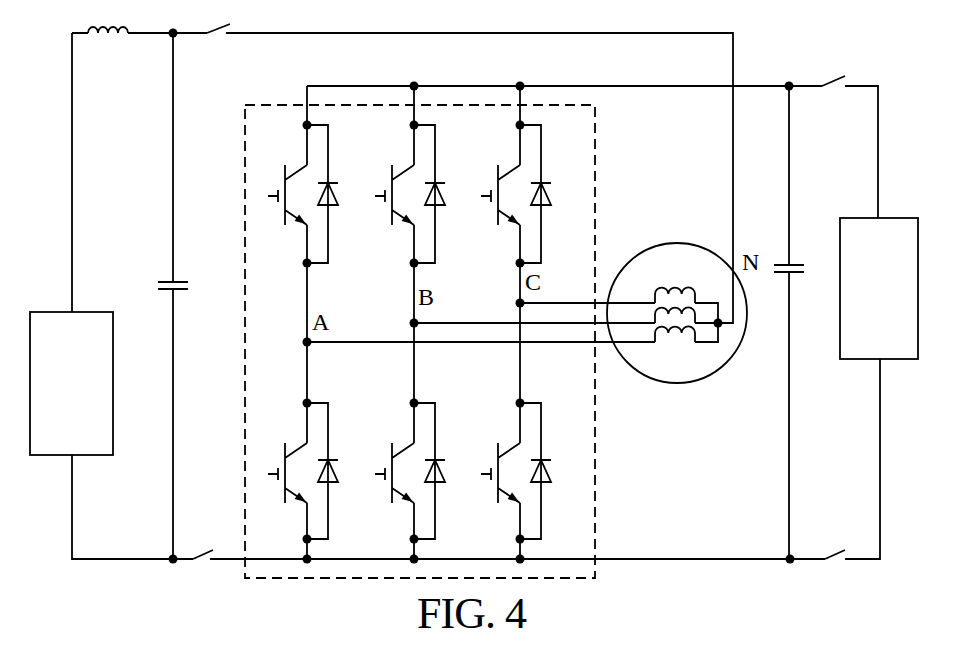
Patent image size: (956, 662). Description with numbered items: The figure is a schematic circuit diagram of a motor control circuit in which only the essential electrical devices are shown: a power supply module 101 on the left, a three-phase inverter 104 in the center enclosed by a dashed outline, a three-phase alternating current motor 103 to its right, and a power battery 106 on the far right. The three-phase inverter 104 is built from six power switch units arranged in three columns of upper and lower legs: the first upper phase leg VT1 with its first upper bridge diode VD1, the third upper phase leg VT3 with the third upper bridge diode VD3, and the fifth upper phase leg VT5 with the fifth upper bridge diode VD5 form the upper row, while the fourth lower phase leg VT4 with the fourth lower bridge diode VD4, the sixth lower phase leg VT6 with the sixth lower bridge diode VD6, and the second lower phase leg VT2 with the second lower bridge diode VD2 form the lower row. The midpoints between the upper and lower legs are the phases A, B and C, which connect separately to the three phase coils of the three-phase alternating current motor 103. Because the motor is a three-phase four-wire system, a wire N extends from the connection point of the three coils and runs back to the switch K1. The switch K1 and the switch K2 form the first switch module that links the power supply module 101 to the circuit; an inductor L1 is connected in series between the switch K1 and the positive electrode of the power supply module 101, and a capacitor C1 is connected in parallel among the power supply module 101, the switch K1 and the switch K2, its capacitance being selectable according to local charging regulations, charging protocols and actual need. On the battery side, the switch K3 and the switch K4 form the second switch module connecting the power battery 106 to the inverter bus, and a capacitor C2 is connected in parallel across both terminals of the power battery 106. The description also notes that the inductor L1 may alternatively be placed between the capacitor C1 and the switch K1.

The power supply module 101 is at (80, 312).
The three-phase alternating current motor 103 is at (676, 244).
The three-phase inverter 104 is at (596, 180).
The power battery 106 is at (864, 218).
The inductor L1 is at (108, 17).
The switch K1 is at (218, 18).
The switch K2 is at (204, 543).
The switch K3 is at (837, 70).
The switch K4 is at (837, 543).
The capacitor C1 is at (160, 273).
The capacitor C2 is at (800, 282).
The first upper phase leg VT1 is at (278, 181).
The second lower phase leg VT2 is at (496, 457).
The third upper phase leg VT3 is at (391, 181).
The fourth lower phase leg VT4 is at (278, 457).
The fifth upper phase leg VT5 is at (497, 181).
The sixth lower phase leg VT6 is at (391, 457).
The first upper bridge diode VD1 is at (344, 194).
The second lower bridge diode VD2 is at (556, 471).
The third upper bridge diode VD3 is at (450, 194).
The fourth lower bridge diode VD4 is at (343, 471).
The fifth upper bridge diode VD5 is at (557, 194).
The sixth lower bridge diode VD6 is at (450, 471).